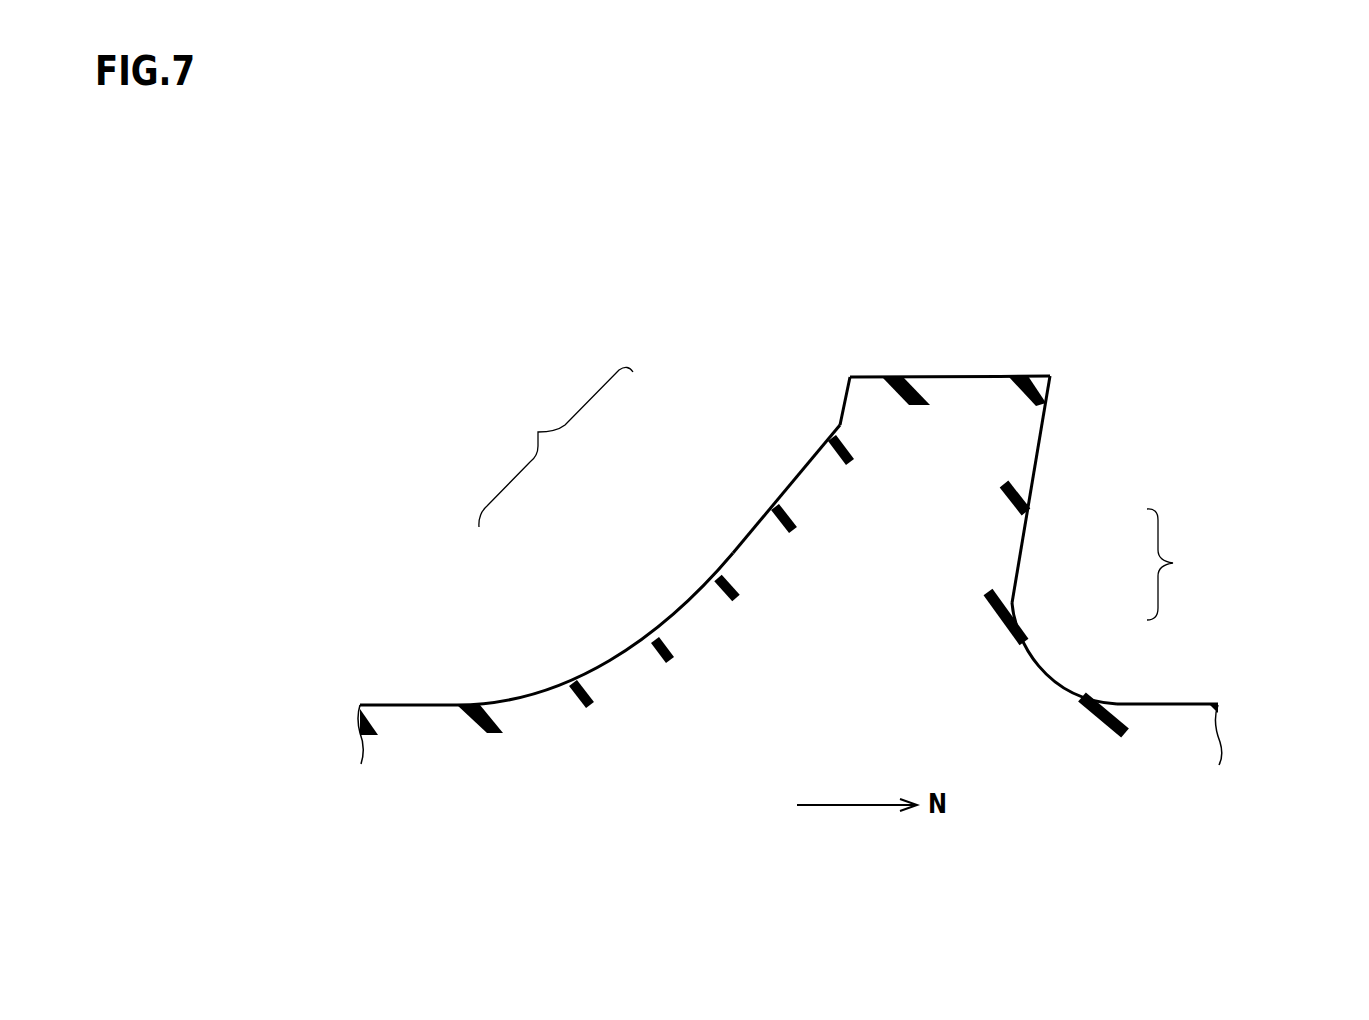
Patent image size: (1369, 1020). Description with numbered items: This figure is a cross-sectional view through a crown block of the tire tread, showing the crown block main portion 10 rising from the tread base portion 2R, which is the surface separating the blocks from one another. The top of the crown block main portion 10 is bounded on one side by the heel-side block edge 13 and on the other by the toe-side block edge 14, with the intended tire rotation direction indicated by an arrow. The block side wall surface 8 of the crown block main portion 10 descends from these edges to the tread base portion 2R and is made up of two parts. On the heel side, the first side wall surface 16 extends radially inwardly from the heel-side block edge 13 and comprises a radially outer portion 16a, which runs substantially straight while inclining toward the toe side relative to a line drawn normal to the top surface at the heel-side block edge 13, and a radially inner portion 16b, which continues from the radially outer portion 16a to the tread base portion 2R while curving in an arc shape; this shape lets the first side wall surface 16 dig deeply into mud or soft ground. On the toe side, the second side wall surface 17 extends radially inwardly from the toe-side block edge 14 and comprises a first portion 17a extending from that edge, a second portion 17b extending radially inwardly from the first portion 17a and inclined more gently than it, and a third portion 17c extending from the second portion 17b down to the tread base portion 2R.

The crown block main portion 10 is at (778, 350).
The toe-side block edge 14 is at (850, 377).
The heel-side block edge 13 is at (1050, 376).
The block side wall surface 8 is at (1078, 435).
The second side wall surface 17 is at (653, 536).
The first portion 17a is at (845, 397).
The second portion 17b is at (730, 557).
The third portion 17c is at (587, 673).
The first side wall surface 16 is at (1100, 554).
The radially outer portion 16a is at (1022, 537).
The radially inner portion 16b is at (1040, 658).
The tread base portion 2R is at (1185, 703).